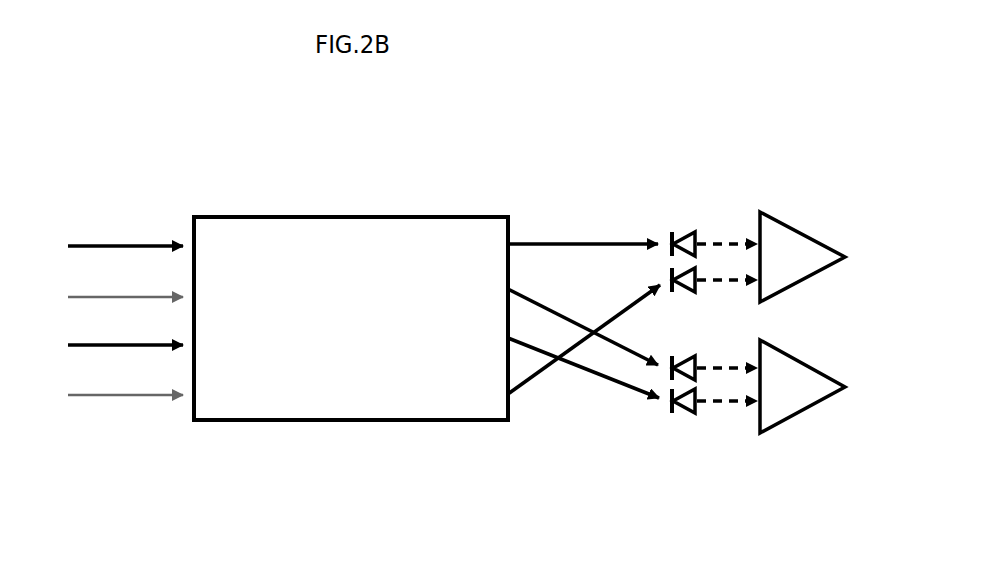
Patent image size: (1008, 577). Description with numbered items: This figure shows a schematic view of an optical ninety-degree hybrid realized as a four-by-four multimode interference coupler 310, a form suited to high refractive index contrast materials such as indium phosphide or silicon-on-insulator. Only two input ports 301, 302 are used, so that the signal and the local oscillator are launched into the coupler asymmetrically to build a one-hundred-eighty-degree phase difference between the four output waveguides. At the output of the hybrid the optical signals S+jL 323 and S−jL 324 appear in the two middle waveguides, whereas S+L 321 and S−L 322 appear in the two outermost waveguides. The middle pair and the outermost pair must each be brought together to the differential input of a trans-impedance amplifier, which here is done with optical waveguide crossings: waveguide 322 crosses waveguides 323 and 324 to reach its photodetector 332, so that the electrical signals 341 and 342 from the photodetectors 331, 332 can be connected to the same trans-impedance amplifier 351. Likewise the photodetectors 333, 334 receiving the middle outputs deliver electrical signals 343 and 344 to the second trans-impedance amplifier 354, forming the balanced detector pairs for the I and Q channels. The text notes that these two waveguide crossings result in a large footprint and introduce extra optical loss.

The input port 301 is at (165, 243).
The input port 302 is at (95, 350).
The 4×4 MMI coupler 310 is at (347, 216).
The S+L optical signal waveguide 321 is at (597, 237).
The S−L optical signal waveguide 322 is at (612, 317).
The S+jL optical signal waveguide 323 is at (612, 341).
The S−jL optical signal waveguide 324 is at (644, 398).
The photodetector 331 is at (683, 232).
The photodetector 332 is at (698, 292).
The photodetector 333 is at (683, 368).
The photodetector 334 is at (683, 413).
The electrical signal 341 is at (728, 236).
The electrical signal 342 is at (737, 273).
The electrical signal 343 is at (727, 365).
The electrical signal 344 is at (720, 405).
The Trans-Impedance Amplifier 351 is at (801, 226).
The Trans-Impedance Amplifier 354 is at (795, 415).